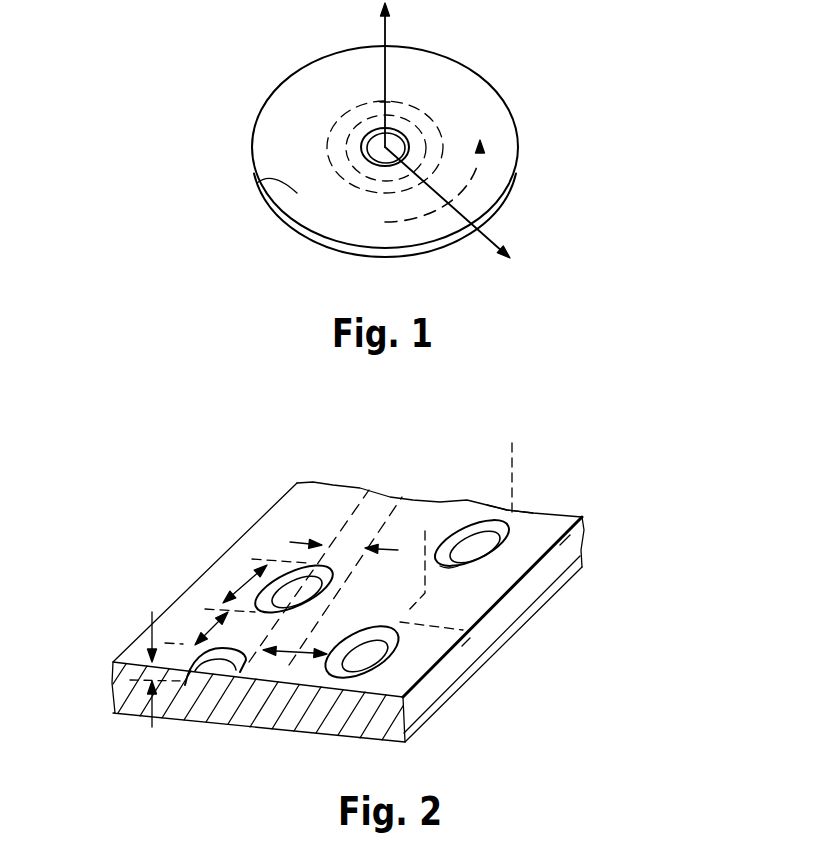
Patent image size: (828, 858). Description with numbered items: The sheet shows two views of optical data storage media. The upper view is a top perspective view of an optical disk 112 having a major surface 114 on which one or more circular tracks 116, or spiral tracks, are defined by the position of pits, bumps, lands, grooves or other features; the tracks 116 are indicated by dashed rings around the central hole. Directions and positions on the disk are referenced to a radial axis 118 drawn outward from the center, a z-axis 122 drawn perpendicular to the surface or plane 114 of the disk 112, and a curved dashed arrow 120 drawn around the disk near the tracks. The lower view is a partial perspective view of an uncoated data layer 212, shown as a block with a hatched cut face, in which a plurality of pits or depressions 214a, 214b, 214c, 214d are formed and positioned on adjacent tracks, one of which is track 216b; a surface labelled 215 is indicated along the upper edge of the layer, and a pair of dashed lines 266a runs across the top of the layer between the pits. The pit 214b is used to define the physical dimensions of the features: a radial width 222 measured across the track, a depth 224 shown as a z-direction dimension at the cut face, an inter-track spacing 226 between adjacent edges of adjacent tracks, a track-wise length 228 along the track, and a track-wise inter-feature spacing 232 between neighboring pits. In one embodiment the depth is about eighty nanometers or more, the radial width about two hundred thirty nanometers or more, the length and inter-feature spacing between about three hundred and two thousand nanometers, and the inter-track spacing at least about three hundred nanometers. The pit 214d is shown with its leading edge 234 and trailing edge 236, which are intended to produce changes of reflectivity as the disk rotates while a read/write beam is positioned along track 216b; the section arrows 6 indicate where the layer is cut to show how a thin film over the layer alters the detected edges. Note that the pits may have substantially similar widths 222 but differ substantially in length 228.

In FIG. 1, the optical disk 112 is at (208, 154).
In FIG. 1, the major surface 114 is at (256, 183).
In FIG. 1, the circular tracks 116 is at (398, 103).
In FIG. 1, the radial axis 118 is at (483, 238).
In FIG. 1, the circumferential direction 120 is at (475, 173).
In FIG. 1, the z-axis 122 is at (386, 28).
In FIG. 2, the data layer 212 is at (609, 539).
In FIG. 2, the pit 214a is at (190, 670).
In FIG. 2, the pit 214b is at (290, 577).
In FIG. 2, the pit 214c is at (378, 653).
In FIG. 2, the pit 214d is at (478, 543).
In FIG. 2, the top surface layer 215 is at (548, 543).
In FIG. 2, the track 216b is at (470, 638).
In FIG. 2, the radial width 222 is at (295, 542).
In FIG. 2, the depth 224 is at (150, 622).
In FIG. 2, the inter-track spacing 226 is at (272, 690).
In FIG. 2, the length 228 is at (243, 593).
In FIG. 2, the inter-feature spacing 232 is at (207, 637).
In FIG. 2, the leading edge 234 is at (510, 513).
In FIG. 2, the trailing edge 236 is at (445, 570).
In FIG. 2, the track 266a is at (362, 515).
In FIG. 2, the section line 6- 6 is at (443, 523).